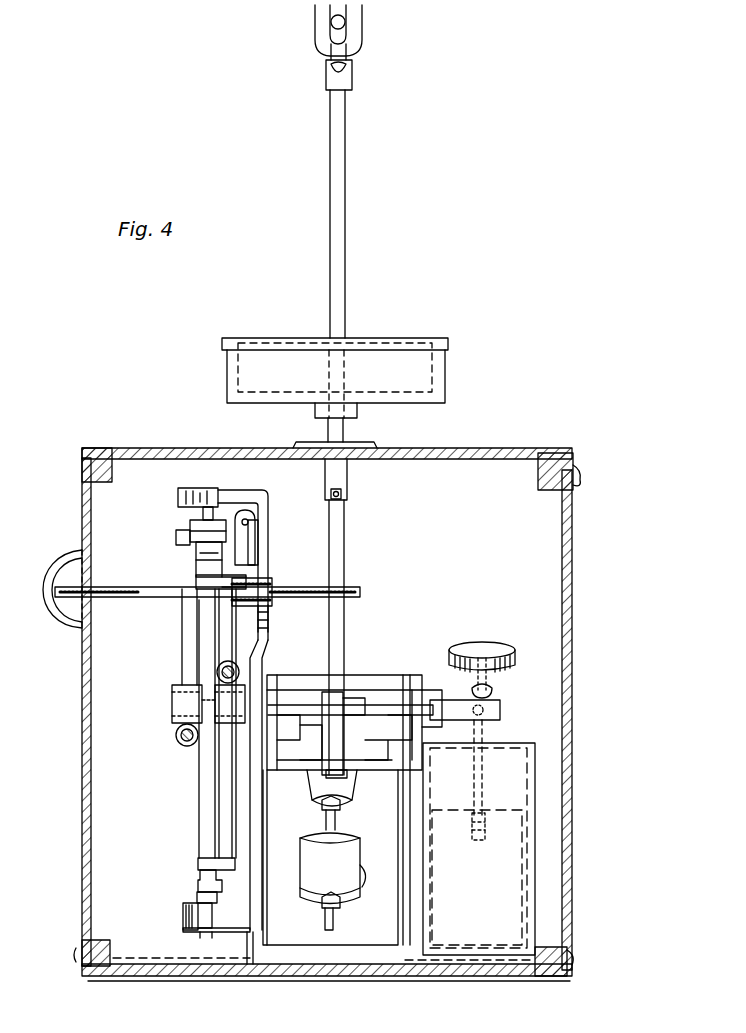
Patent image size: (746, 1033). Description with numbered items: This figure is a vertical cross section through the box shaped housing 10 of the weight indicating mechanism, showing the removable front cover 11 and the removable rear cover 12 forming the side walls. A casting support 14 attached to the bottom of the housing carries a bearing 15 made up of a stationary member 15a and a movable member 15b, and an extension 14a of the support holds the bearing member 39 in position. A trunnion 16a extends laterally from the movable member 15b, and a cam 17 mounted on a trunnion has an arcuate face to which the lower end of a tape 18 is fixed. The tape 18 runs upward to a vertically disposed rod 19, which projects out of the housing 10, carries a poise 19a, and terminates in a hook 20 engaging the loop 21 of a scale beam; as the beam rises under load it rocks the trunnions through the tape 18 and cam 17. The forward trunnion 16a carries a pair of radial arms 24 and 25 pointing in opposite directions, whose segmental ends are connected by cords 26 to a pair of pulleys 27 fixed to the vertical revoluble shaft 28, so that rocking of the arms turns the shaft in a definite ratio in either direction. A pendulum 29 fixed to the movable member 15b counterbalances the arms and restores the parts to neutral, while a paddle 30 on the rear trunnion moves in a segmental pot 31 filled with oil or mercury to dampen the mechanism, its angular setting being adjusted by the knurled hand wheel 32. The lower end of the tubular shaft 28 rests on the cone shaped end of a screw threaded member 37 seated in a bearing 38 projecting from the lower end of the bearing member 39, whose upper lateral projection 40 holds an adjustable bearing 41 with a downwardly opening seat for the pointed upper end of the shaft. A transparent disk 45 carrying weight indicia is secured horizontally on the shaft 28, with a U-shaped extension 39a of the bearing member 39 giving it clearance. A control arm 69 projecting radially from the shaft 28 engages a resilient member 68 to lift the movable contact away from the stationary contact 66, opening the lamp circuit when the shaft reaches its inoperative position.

The box shaped housing 10 is at (325, 683).
The removable front cover 11 is at (82, 712).
The removable rear cover 12 is at (572, 628).
The casting support 14 is at (354, 722).
The extension of support 14a is at (262, 840).
The bearing 15 is at (377, 688).
The stationary member 15a is at (357, 768).
The movable member 15b is at (500, 712).
The trunnion 16a is at (172, 712).
The cam 17 is at (308, 770).
The tape 18 is at (345, 545).
The rod 19 is at (346, 198).
The poise 19a is at (445, 342).
The hook 20 is at (334, 47).
The loop 21 is at (352, 30).
The radial arm 24 is at (182, 654).
The radial arm 25 is at (215, 823).
The cords 26 is at (190, 538).
The pulleys 27 is at (192, 528).
The revoluble shaft 28 is at (199, 781).
The pendulum 29 is at (356, 900).
The paddle 30 is at (512, 892).
The segmental pot 31 is at (530, 772).
The knurled hand wheel 32 is at (487, 642).
The member 37 is at (215, 949).
The bearing 38 is at (183, 926).
The bearing member 39 is at (232, 698).
The U-shaped extension 39a is at (268, 552).
The lateral projection 40 is at (178, 498).
The bearing 41 is at (220, 496).
The weight indicia carrying member 45 is at (207, 608).
The stationary contact 66 is at (245, 520).
The resilient member 68 is at (247, 604).
The control arm 69 is at (216, 569).